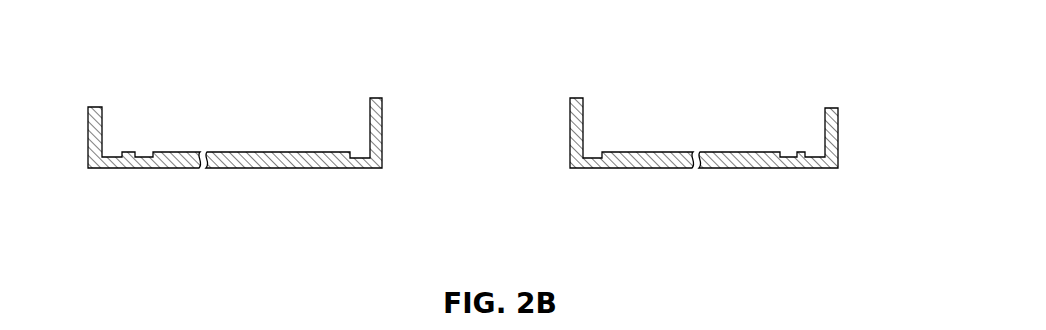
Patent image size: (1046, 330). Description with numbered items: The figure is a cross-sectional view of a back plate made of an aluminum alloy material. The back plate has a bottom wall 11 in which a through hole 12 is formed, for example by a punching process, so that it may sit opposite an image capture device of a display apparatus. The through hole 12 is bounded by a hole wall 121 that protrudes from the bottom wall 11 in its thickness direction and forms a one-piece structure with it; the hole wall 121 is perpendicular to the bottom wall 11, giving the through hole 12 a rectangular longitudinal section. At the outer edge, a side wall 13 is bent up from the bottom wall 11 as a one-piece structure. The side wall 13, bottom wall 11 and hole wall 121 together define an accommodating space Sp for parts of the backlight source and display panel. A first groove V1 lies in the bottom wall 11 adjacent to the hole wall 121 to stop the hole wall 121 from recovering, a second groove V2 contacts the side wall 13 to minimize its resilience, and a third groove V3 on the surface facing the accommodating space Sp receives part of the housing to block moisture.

The bottom wall 11 is at (320, 167).
The through hole 12 is at (507, 150).
The hole wall 121 is at (572, 122).
The side wall 13 is at (838, 122).
The accommodating space Sp is at (238, 125).
The first groove V1 is at (358, 152).
The second groove V2 is at (114, 156).
The third groove V3 is at (142, 154).